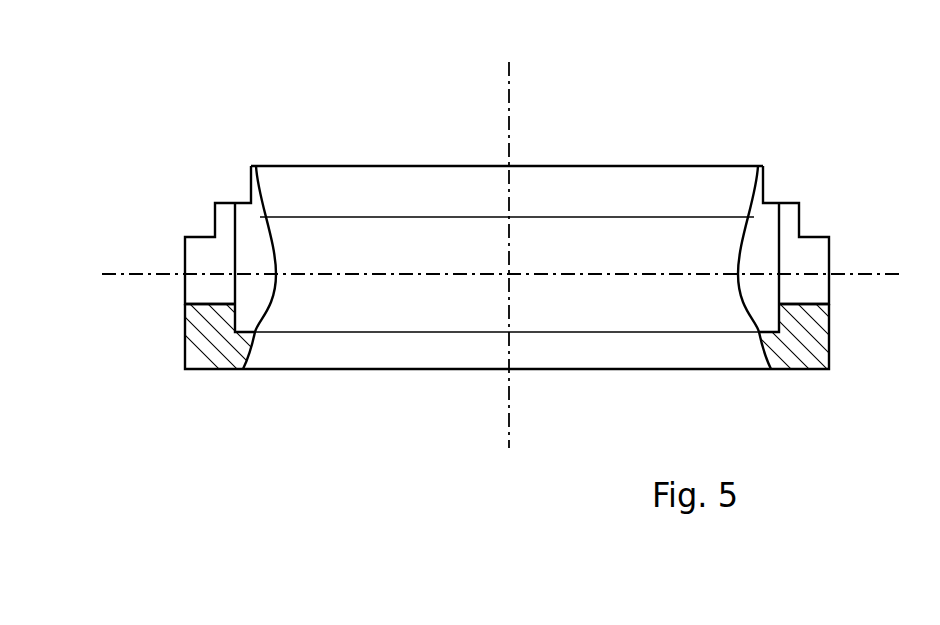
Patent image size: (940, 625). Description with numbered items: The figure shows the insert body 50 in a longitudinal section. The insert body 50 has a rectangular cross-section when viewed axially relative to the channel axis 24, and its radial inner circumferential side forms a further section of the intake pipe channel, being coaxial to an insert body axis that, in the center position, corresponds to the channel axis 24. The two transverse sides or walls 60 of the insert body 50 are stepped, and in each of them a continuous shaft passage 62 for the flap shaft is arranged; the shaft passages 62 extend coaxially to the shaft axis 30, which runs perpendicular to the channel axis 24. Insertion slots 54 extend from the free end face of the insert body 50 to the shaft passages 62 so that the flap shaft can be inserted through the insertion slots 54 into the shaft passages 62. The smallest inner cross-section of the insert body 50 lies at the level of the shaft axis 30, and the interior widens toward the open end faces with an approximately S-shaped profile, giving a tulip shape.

The insert body 50 is at (204, 141).
The channel axis 24 is at (509, 123).
The shaft axis 30 is at (121, 270).
The insertion slot 54 is at (227, 224).
The shaft passage 62 is at (198, 287).
The transverse side or wall 60 is at (185, 332).